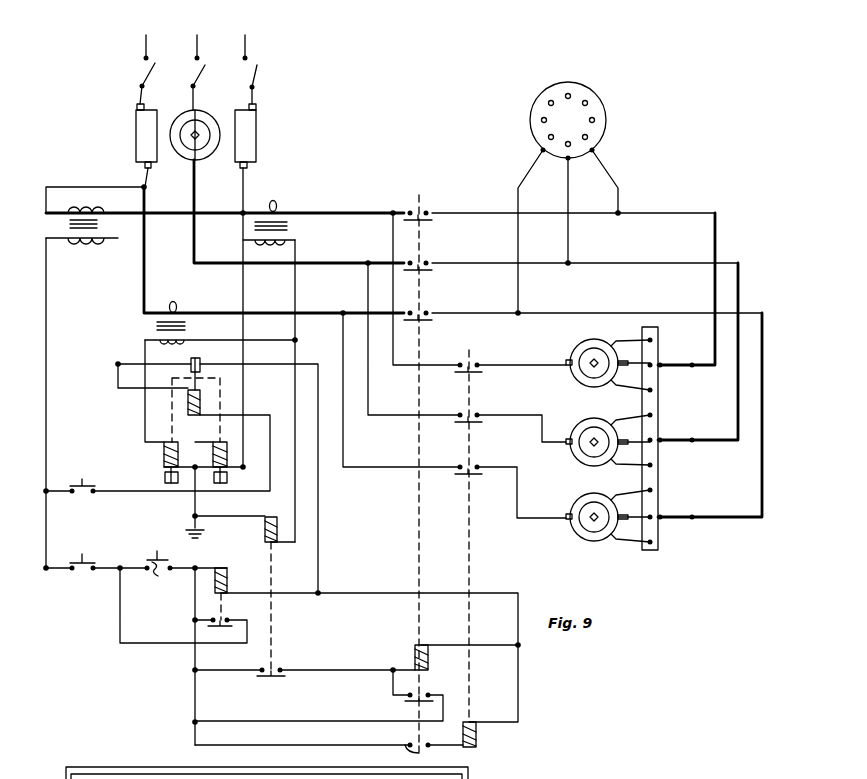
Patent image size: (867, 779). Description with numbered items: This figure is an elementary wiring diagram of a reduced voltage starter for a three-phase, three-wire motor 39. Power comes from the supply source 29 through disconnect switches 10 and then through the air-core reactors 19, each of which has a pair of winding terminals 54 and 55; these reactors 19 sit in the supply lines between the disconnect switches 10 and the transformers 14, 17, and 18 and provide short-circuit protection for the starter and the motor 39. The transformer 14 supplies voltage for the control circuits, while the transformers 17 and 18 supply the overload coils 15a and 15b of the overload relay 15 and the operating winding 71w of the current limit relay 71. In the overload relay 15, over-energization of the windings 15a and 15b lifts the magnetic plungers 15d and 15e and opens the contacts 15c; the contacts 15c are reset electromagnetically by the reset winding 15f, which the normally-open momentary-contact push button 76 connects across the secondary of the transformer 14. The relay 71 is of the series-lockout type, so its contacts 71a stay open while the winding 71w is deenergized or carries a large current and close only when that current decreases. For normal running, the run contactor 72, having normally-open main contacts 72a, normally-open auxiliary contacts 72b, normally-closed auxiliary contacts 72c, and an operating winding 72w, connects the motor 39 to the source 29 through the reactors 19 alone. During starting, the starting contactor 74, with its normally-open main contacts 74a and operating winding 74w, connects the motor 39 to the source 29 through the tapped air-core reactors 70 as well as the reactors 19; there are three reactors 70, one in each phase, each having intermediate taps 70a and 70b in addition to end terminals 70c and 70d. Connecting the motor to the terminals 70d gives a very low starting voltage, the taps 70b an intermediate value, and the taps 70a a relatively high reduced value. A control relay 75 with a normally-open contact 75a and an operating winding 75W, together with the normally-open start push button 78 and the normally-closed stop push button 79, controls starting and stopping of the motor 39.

The supply source 29 is at (202, 42).
The disconnect switches 10 is at (157, 73).
The terminal 54 is at (137, 104).
The air-core reactors 19 is at (157, 116).
The terminal 55 is at (152, 165).
The transformer 14 is at (46, 237).
The transformer 18 is at (226, 243).
The transformer 17 is at (214, 303).
The overload relay 15 is at (136, 464).
The operating winding 15a is at (177, 450).
The operating winding 15b is at (228, 455).
The contacts 15c is at (201, 360).
The magnetic plunger 15d is at (165, 477).
The magnetic plunger 15e is at (228, 477).
The reset winding 15f is at (186, 396).
The push button 76 is at (84, 469).
The stop push button 79 is at (96, 553).
The start push button 78 is at (159, 575).
The control relay 75 is at (228, 556).
The operating winding 75W is at (228, 583).
The contact 75a is at (223, 618).
The current limit relay 71 is at (274, 630).
The operating winding 71w is at (265, 532).
The contacts 71a is at (278, 668).
The run contactor 72 is at (416, 534).
The main contacts 72a is at (418, 210).
The auxiliary contacts 72b is at (424, 694).
The auxiliary contacts 72c is at (422, 750).
The operating winding 72w is at (413, 656).
The starting contactor 74 is at (474, 541).
The main contacts 74a is at (468, 363).
The operating winding 74w is at (477, 735).
The motor 39 is at (608, 110).
The tapped air-core reactors 70 is at (577, 382).
The intermediate tap 70a is at (610, 341).
The intermediate tap 70b is at (630, 362).
The terminal 70c is at (568, 361).
The terminal 70d is at (613, 388).